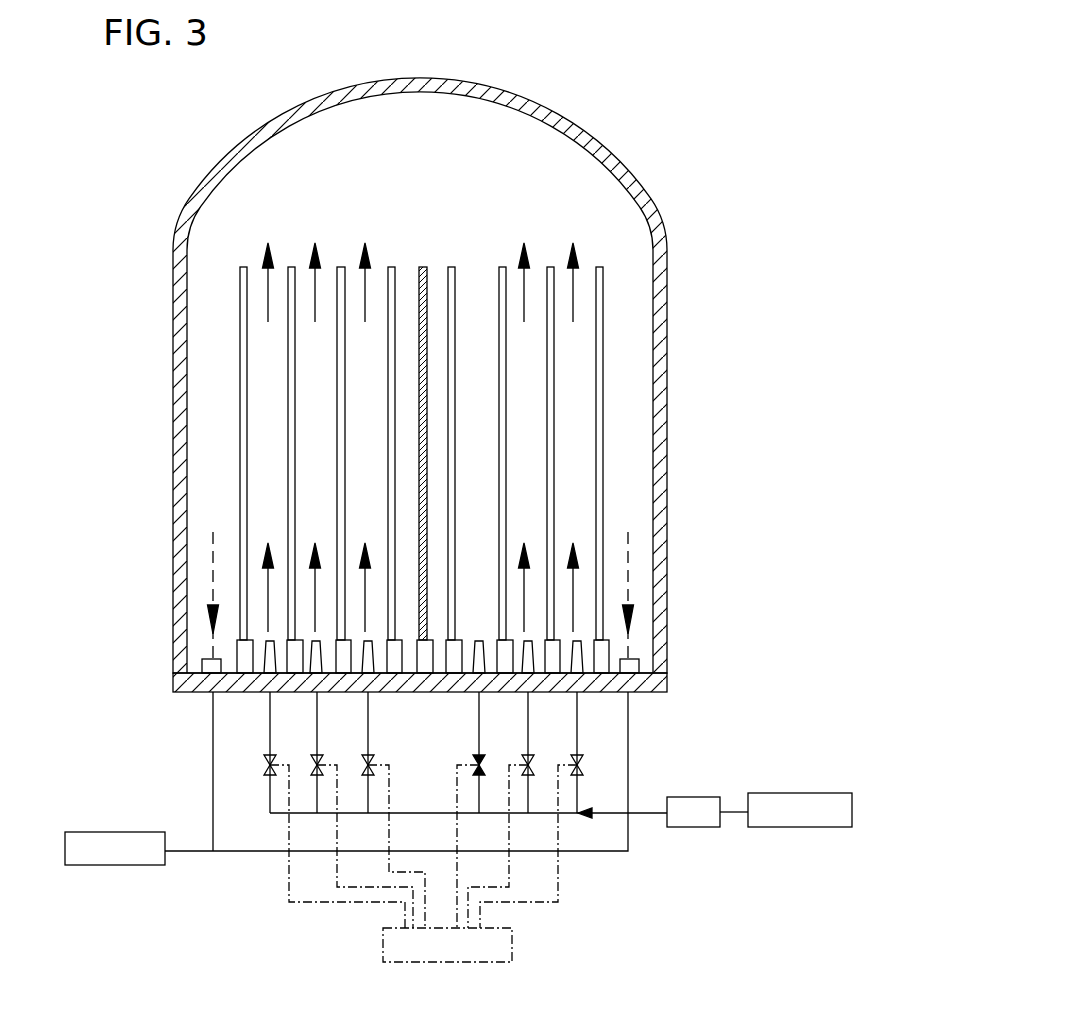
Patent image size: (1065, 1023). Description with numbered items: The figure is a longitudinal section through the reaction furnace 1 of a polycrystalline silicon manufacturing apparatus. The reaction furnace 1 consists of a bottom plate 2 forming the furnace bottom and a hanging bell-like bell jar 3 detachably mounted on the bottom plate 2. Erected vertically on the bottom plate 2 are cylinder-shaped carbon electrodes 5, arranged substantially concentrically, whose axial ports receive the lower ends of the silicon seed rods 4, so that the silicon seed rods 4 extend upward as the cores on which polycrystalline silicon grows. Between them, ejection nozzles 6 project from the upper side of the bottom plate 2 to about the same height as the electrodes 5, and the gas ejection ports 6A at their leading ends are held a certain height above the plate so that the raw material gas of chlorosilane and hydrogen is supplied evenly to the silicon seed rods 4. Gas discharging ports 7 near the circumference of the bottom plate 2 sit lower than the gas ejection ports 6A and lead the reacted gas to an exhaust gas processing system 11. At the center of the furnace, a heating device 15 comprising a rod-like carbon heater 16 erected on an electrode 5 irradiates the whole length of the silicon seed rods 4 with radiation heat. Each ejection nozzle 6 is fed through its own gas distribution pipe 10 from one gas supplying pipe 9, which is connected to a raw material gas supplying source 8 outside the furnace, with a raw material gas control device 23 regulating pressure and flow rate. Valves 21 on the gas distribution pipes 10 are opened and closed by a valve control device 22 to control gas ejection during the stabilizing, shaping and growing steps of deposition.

The reaction furnace 1 is at (678, 180).
The bottom plate 2 is at (200, 690).
The bell jar 3 is at (173, 345).
The silicon seed rods 4 is at (291, 266).
The electrodes 5 is at (237, 666).
The ejection nozzles 6 is at (429, 641).
The gas ejection ports 6A is at (271, 643).
The gas discharging ports 7 is at (205, 659).
The raw material gas supplying source 8 is at (832, 827).
The gas supplying pipe 9 is at (653, 813).
The gas distribution pipes 10 is at (578, 733).
The exhaust gas processing system 11 is at (105, 865).
The heating device 15 is at (403, 401).
The carbon heater 16 is at (419, 392).
The valves 21 is at (275, 757).
The valve control device 22 is at (512, 958).
The raw material gas control device 23 is at (690, 827).